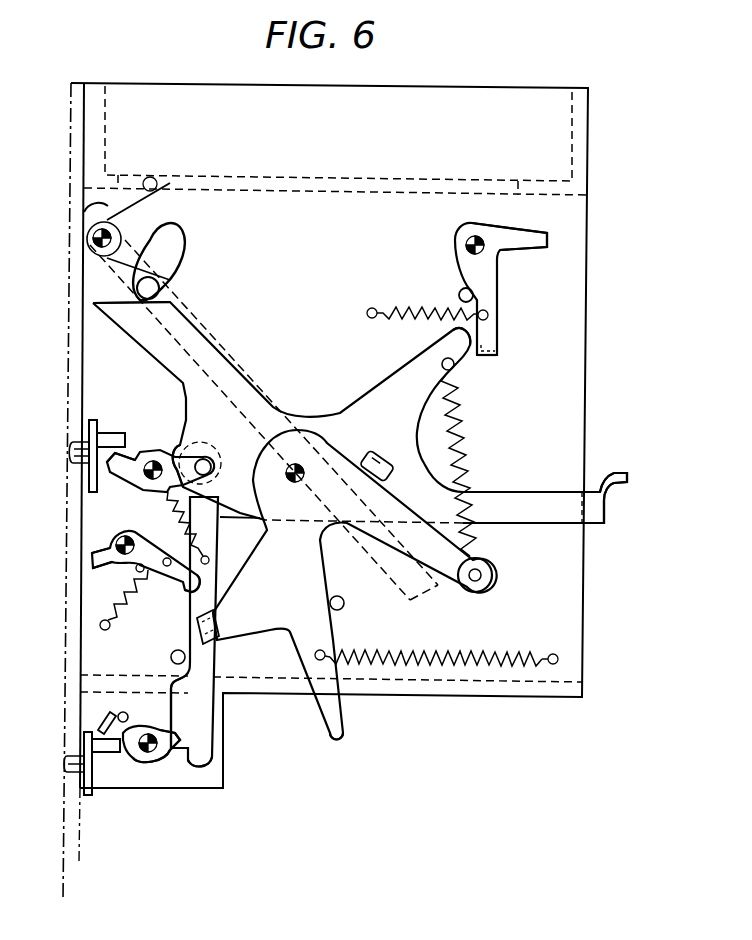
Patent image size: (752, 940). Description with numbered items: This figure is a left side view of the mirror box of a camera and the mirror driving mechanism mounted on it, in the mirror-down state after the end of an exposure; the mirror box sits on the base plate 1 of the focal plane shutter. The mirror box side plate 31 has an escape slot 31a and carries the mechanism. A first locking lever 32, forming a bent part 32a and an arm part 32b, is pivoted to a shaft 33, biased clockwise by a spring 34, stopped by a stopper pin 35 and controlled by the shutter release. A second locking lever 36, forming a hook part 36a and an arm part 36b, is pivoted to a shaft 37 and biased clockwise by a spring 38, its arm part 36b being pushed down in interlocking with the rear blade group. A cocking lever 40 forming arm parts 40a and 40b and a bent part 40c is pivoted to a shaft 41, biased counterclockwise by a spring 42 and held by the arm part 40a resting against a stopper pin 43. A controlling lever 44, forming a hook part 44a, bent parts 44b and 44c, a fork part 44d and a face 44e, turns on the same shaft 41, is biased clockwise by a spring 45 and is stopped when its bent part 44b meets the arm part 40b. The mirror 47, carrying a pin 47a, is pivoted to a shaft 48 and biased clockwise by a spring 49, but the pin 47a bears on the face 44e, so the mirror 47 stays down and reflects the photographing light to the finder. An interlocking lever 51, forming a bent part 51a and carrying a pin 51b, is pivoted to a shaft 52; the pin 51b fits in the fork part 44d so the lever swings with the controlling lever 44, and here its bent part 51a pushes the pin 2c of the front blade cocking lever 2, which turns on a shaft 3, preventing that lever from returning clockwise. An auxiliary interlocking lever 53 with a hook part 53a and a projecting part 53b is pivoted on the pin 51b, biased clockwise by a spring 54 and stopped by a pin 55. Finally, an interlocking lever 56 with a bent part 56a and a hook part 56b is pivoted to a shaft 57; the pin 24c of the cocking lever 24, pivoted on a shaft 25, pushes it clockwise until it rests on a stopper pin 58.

The base plate 1 is at (71, 100).
The front blade cocking lever 2 is at (88, 430).
The pin 2c is at (112, 432).
The shaft 3 is at (72, 453).
The cocking lever 24 is at (84, 795).
The pin 24c is at (106, 753).
The shaft 25 is at (66, 764).
The mirror box side plate 31 is at (582, 315).
The escape slot 31a is at (170, 230).
The first locking lever 32 is at (498, 283).
The bent part 32a is at (498, 352).
The arm part 32b is at (520, 237).
The shaft 33 is at (468, 238).
The spring 34 is at (398, 303).
The stopper pin 35 is at (462, 288).
The second locking lever 36 is at (120, 570).
The hook part 36a is at (186, 590).
The arm part 36b is at (92, 560).
The shaft 37 is at (118, 538).
The spring 38 is at (126, 610).
The cocking lever 40 is at (312, 544).
The arm part 40a is at (340, 690).
The arm part 40b is at (467, 588).
The bent part 40c is at (218, 620).
The shaft 41 is at (297, 482).
The spring 42 is at (410, 652).
The stopper pin 43 is at (345, 603).
The controlling lever 44 is at (405, 384).
The hook part 44a is at (466, 362).
The bent part 44b is at (376, 456).
The bent part 44c is at (604, 524).
The fork part 44d is at (188, 448).
The face 44e is at (94, 300).
The spring 45 is at (464, 418).
The mirror 47 is at (188, 340).
The pin 47a is at (160, 295).
The shaft 48 is at (96, 236).
The spring 49 is at (96, 206).
The interlocking lever 51 is at (165, 452).
The bent part 51a is at (110, 473).
The pin 51b is at (206, 465).
The shaft 52 is at (150, 460).
The auxiliary interlocking lever 53 is at (222, 528).
The hook part 53a is at (213, 763).
The projecting part 53b is at (195, 712).
The spring 54 is at (178, 512).
The pin 55 is at (170, 657).
The interlocking lever 56 is at (150, 760).
The bent part 56a is at (98, 730).
The hook part 56b is at (172, 732).
The shaft 57 is at (158, 755).
The stopper pin 58 is at (117, 715).